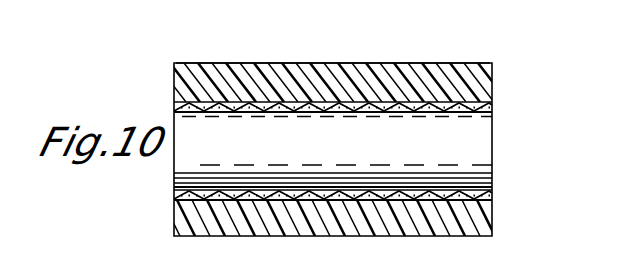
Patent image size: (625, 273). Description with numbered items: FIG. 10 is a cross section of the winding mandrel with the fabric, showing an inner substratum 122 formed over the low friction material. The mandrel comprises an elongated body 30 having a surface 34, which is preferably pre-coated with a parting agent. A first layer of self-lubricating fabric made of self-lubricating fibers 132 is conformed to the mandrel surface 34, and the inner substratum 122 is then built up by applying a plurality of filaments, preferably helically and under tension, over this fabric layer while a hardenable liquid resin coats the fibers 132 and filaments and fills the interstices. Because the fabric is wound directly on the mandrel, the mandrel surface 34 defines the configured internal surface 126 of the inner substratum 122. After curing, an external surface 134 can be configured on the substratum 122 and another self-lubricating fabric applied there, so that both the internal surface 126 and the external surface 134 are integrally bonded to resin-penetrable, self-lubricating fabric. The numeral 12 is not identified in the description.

The tubular member 12 is at (174, 179).
The elongated body 30 is at (324, 153).
The mandrel surface 34 is at (345, 118).
The inner substratum 122 is at (470, 84).
The internal surface 126 is at (472, 110).
The self-lubricating fibers 132 is at (233, 102).
The external surface 134 is at (424, 63).